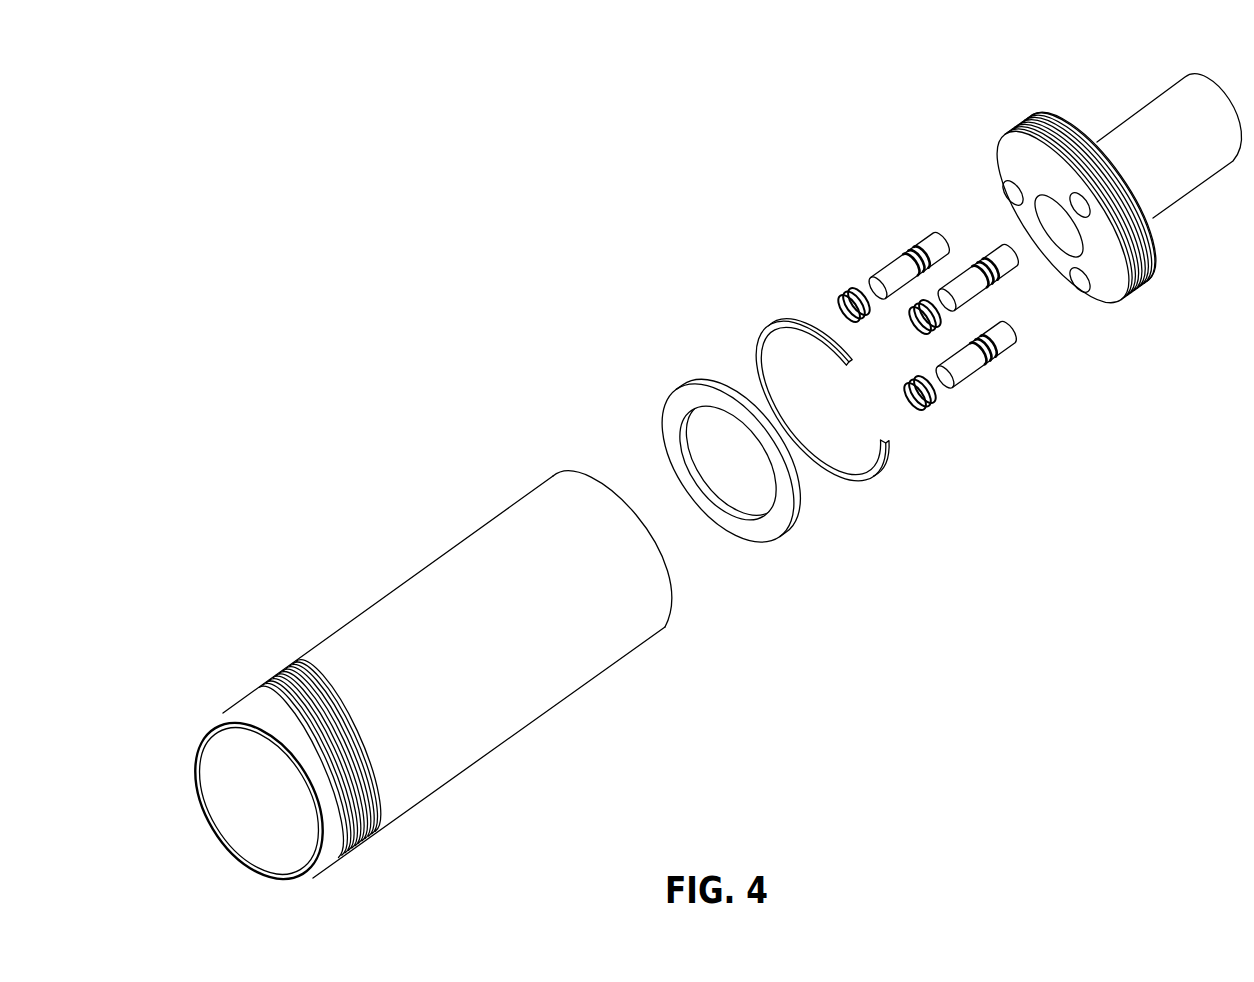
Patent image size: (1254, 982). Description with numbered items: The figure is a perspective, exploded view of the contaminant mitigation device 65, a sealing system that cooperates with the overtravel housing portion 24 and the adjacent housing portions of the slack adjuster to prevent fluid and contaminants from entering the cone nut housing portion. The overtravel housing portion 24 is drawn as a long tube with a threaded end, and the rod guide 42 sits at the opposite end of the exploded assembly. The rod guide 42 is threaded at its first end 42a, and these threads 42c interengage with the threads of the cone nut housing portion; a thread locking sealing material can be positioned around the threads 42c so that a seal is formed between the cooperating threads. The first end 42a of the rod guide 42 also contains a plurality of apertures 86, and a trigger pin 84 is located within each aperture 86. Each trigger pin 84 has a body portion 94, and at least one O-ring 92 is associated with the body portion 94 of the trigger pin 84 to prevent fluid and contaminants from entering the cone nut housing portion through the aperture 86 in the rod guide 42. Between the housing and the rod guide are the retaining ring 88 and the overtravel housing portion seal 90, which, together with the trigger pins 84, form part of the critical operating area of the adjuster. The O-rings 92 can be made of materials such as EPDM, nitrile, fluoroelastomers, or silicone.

The overtravel housing portion 24 is at (398, 605).
The rod guide 42 is at (1077, 188).
The first end of the rod guide 42a is at (1018, 168).
The threads of the rod guide 42c is at (1081, 205).
The contaminant mitigation device 65 is at (450, 310).
The trigger pin 84 is at (913, 274).
The aperture 86 is at (1010, 195).
The retaining ring 88 is at (758, 340).
The overtravel housing portion seal 90 is at (665, 410).
The O-ring 92 is at (845, 300).
The body portion of the trigger pin 94 is at (905, 252).